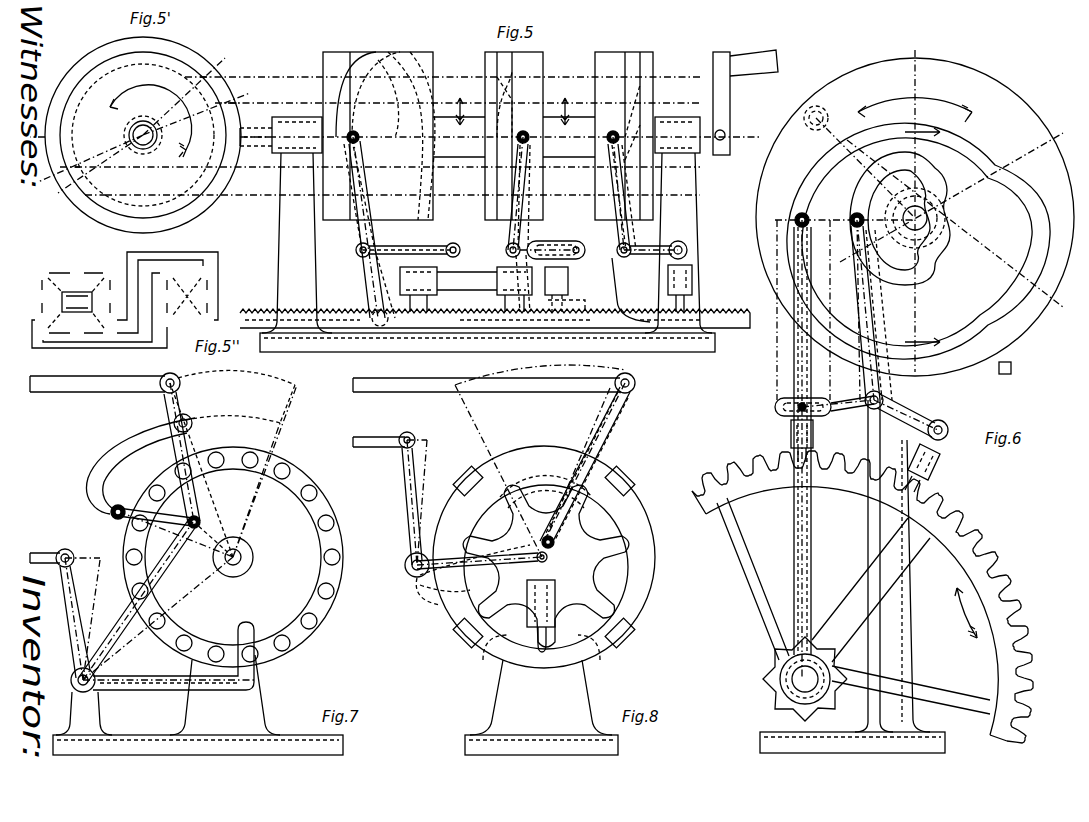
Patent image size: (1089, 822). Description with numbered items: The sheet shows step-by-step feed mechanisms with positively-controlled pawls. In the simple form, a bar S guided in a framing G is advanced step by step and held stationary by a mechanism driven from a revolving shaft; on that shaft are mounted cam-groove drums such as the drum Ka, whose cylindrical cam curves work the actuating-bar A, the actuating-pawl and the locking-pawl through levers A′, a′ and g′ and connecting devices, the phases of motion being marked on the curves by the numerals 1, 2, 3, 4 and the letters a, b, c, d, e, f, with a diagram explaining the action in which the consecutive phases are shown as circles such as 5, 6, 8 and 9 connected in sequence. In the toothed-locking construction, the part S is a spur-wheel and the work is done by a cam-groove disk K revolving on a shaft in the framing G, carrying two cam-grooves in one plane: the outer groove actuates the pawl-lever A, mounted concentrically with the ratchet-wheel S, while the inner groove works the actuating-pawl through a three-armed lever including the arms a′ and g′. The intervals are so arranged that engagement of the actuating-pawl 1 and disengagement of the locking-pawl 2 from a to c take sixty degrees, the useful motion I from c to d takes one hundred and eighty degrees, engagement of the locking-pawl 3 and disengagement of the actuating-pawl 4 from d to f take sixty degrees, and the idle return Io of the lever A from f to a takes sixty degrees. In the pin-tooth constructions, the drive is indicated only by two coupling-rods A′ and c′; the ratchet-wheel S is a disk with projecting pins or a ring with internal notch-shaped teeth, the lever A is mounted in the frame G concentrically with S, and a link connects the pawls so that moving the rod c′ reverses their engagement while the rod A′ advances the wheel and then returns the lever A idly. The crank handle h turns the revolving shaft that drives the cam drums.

In FIG. 5', the cam-groove disk K is at (144, 135).
In FIG. 6, the cam-groove disk K is at (915, 213).
In FIG. 5, the cam-groove drum Ka is at (404, 136).
In FIG. 5'', the actuating-lever A is at (77, 296).
In FIG. 5, the actuating-lever A is at (478, 286).
In FIG. 6, the actuating-lever A is at (814, 444).
In FIG. 7, the actuating-lever A is at (176, 390).
In FIG. 8, the actuating-lever A is at (600, 420).
In FIG. 5, the coupling-rod A′ is at (363, 246).
In FIG. 7, the coupling-rod A′ is at (92, 385).
In FIG. 8, the coupling-rod A′ is at (410, 386).
In FIG. 5, the lever a′ is at (514, 244).
In FIG. 6, the lever a′ is at (846, 400).
In FIG. 7, the lever a′ is at (128, 592).
In FIG. 5'', the lever g′ is at (186, 311).
In FIG. 5, the lever g′ is at (636, 248).
In FIG. 6, the lever g′ is at (912, 410).
In FIG. 5'', the framing G is at (185, 284).
In FIG. 5, the framing G is at (312, 282).
In FIG. 6, the framing G is at (940, 466).
In FIG. 7, the framing G is at (100, 722).
In FIG. 8, the framing G is at (553, 603).
In FIG. 5'', the ratchet-wheel S is at (76, 320).
In FIG. 5, the ratchet-wheel S is at (325, 315).
In FIG. 6, the ratchet-wheel S is at (975, 532).
In FIG. 7, the ratchet-wheel S is at (213, 531).
In FIG. 8, the ratchet-wheel S is at (544, 516).
In FIG. 5', the useful motion I is at (183, 228).
In FIG. 5'', the useful motion I is at (77, 333).
In FIG. 6, the useful motion I is at (805, 208).
In FIG. 5', the idle return motion Io is at (104, 44).
In FIG. 5'', the idle return motion Io is at (77, 273).
In FIG. 6, the idle return motion Io is at (1033, 221).
In FIG. 7, the actuating-rod c′ is at (55, 560).
In FIG. 8, the actuating-rod c′ is at (368, 442).
In FIG. 5, the crank handle h is at (734, 102).
In FIG. 5', the engagement of the actuating-pawl 1 is at (226, 79).
In FIG. 5'', the engagement of the actuating-pawl 1 is at (42, 296).
In FIG. 5, the engagement of the actuating-pawl 1 is at (475, 235).
In FIG. 6, the engagement of the actuating-pawl 1 is at (929, 247).
In FIG. 5', the disengagement of the locking-pawl 2 is at (242, 116).
In FIG. 6, the disengagement of the locking-pawl 2 is at (927, 268).
In FIG. 5', the engagement of the locking-pawl 3 is at (62, 192).
In FIG. 5'', the engagement of the locking-pawl 3 is at (207, 296).
In FIG. 5', the disengagement of the actuating-pawl 4 is at (47, 156).
In FIG. 5'', the disengagement of the actuating-pawl 4 is at (110, 296).
In FIG. 6, the disengagement of the actuating-pawl 4 is at (929, 192).
In FIG. 5', the position 5 is at (30, 137).
In FIG. 6, the position 5 is at (927, 170).
In FIG. 5'', the position 6 is at (42, 320).
In FIG. 5'', the position 8 is at (167, 320).
In FIG. 5'', the position 9 is at (167, 296).
In FIG. 5', the cam point a is at (223, 56).
In FIG. 5'', the cam point a is at (42, 273).
In FIG. 5, the cam point a is at (548, 76).
In FIG. 6, the cam point a is at (1005, 70).
In FIG. 5', the cam point b is at (248, 92).
In FIG. 5'', the cam point b is at (110, 273).
In FIG. 5, the cam point b is at (681, 103).
In FIG. 5', the cam point c is at (257, 137).
In FIG. 5'', the cam point c is at (42, 333).
In FIG. 5, the cam point c is at (681, 137).
In FIG. 5', the cam point d is at (65, 216).
In FIG. 5'', the cam point d is at (110, 333).
In FIG. 5, the cam point d is at (681, 168).
In FIG. 6, the cam point d is at (915, 45).
In FIG. 5', the cam point e is at (40, 180).
In FIG. 5'', the cam point e is at (110, 320).
In FIG. 5, the cam point e is at (681, 195).
In FIG. 6, the cam point e is at (1063, 307).
In FIG. 6, the cam point f is at (1063, 133).